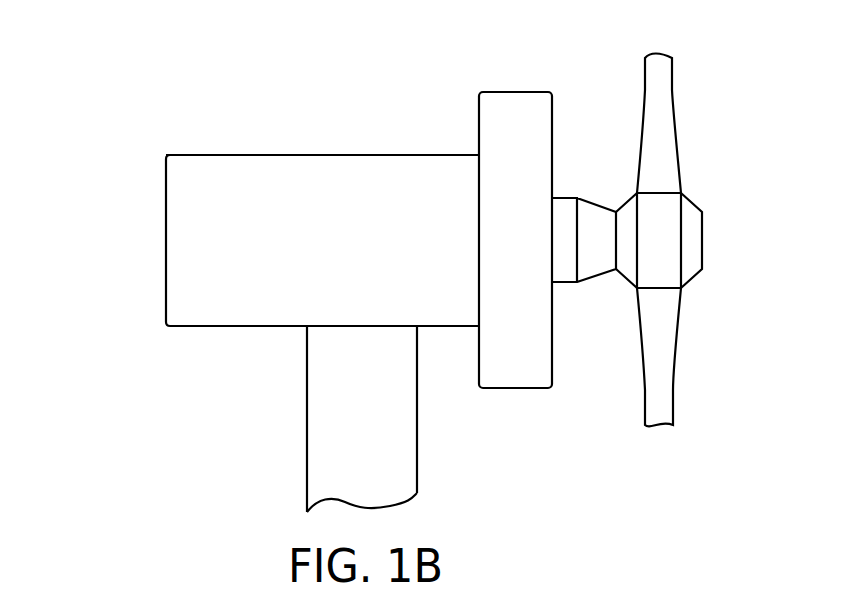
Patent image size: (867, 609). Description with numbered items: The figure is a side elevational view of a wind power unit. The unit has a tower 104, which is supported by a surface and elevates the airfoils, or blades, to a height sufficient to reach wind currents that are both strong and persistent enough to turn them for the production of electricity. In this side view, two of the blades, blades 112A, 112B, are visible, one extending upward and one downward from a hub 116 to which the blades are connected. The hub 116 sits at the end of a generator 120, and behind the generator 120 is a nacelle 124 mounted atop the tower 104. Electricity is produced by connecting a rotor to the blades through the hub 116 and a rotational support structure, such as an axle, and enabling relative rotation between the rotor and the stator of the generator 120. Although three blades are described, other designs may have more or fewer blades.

The tower 104 is at (307, 375).
The airfoil (blade) 112A is at (674, 78).
The airfoil (blade) 112B is at (642, 402).
The hub 116 is at (688, 196).
The generator 120 is at (507, 92).
The nacelle 124 is at (166, 194).